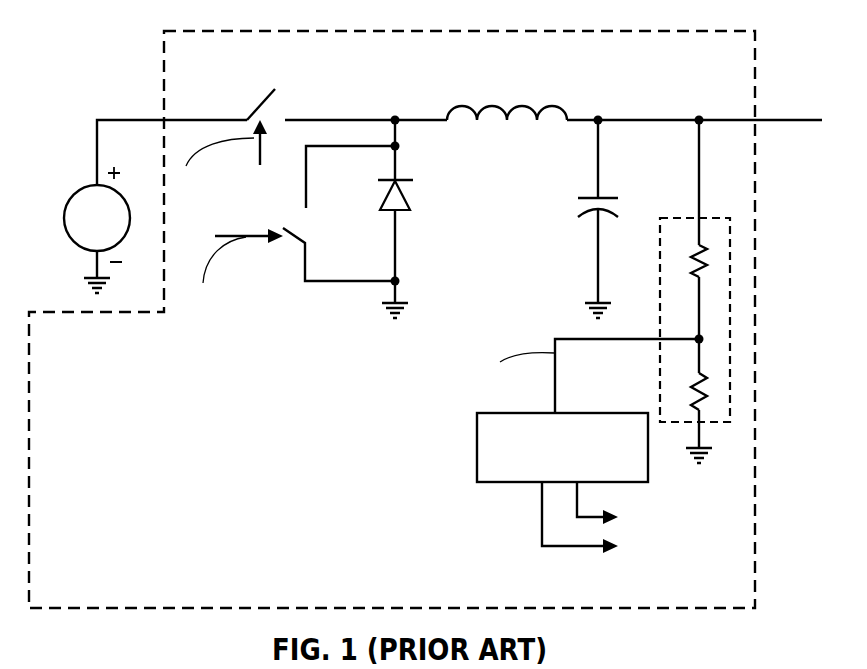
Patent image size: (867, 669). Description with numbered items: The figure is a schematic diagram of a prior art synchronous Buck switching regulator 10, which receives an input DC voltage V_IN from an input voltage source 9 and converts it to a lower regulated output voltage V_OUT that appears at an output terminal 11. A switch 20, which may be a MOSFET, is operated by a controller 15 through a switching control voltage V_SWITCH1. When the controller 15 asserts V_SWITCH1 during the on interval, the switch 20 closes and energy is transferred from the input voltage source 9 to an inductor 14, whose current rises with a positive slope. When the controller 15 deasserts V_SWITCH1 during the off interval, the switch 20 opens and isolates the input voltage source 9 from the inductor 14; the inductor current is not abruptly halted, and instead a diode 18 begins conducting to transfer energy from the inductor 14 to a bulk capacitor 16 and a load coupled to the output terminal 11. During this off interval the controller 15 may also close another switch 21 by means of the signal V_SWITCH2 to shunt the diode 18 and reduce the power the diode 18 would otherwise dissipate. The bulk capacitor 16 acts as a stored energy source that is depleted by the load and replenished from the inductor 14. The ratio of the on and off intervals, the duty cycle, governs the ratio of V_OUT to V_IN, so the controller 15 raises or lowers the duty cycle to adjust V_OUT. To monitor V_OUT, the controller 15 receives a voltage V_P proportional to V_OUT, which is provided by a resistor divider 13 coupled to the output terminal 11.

The input voltage source 9 is at (83, 191).
The synchronous Buck switching regulator 10 is at (756, 250).
The output terminal 11 is at (783, 124).
The resistor divider 13 is at (731, 305).
The inductor 14 is at (479, 125).
The controller 15 is at (482, 412).
The bulk capacitor 16 is at (604, 197).
The diode 18 is at (382, 205).
The switch 20 is at (266, 95).
The another switch 21 is at (291, 241).